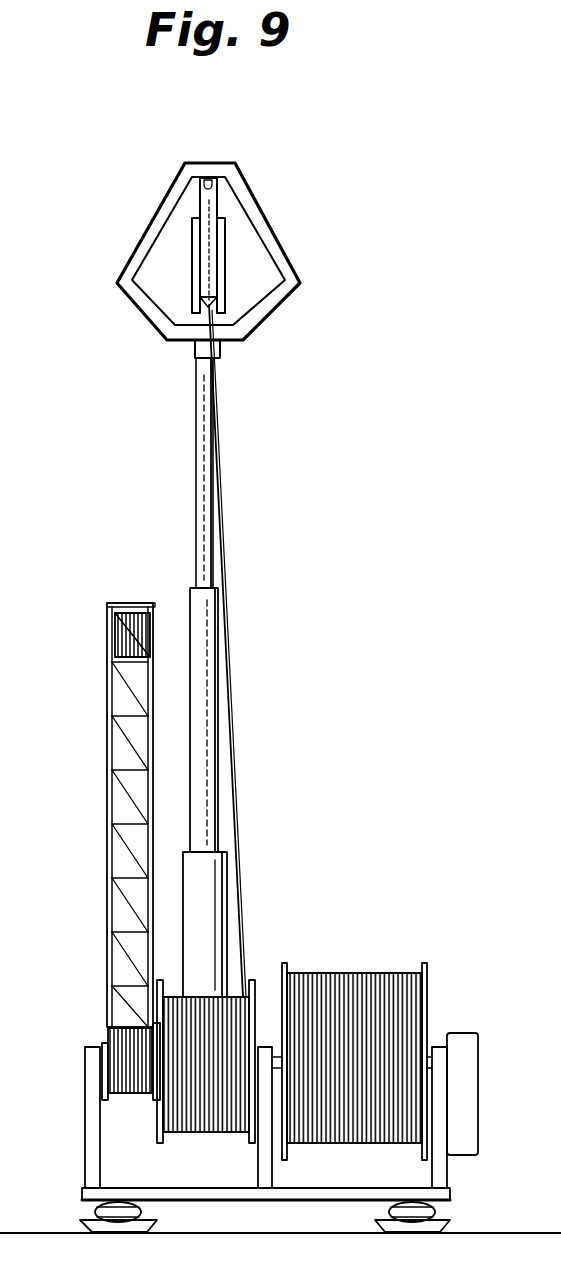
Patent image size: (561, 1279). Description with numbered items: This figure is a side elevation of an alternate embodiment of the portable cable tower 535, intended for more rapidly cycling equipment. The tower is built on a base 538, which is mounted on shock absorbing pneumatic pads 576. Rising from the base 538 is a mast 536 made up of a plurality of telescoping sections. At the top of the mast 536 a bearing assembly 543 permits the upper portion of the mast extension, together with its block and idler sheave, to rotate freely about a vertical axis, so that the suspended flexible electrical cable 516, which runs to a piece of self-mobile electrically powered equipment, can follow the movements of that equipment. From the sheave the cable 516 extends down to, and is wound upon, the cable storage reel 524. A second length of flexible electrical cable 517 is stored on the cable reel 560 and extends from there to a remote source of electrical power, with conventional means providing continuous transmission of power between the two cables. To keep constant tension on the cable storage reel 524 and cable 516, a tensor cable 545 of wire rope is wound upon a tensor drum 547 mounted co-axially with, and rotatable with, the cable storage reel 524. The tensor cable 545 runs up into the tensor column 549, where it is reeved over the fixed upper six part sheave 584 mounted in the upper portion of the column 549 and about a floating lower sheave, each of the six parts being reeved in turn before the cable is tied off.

The bearing assembly 543 is at (195, 350).
The mast 536 is at (207, 665).
The suspended flexible electrical cable 516 is at (234, 757).
The portable cable tower 535 is at (248, 811).
The tensor column 549 is at (107, 848).
The upper six part sheave 584 is at (120, 643).
The tensor cable 545 is at (120, 1061).
The tensor drum 547 is at (104, 1030).
The cable storage reel 524 is at (251, 980).
The second length of flexible electrical cable 517 is at (343, 975).
The cable reel 560 is at (430, 976).
The base 538 is at (82, 1193).
The shock absorbing pneumatic pads 576 is at (390, 1215).